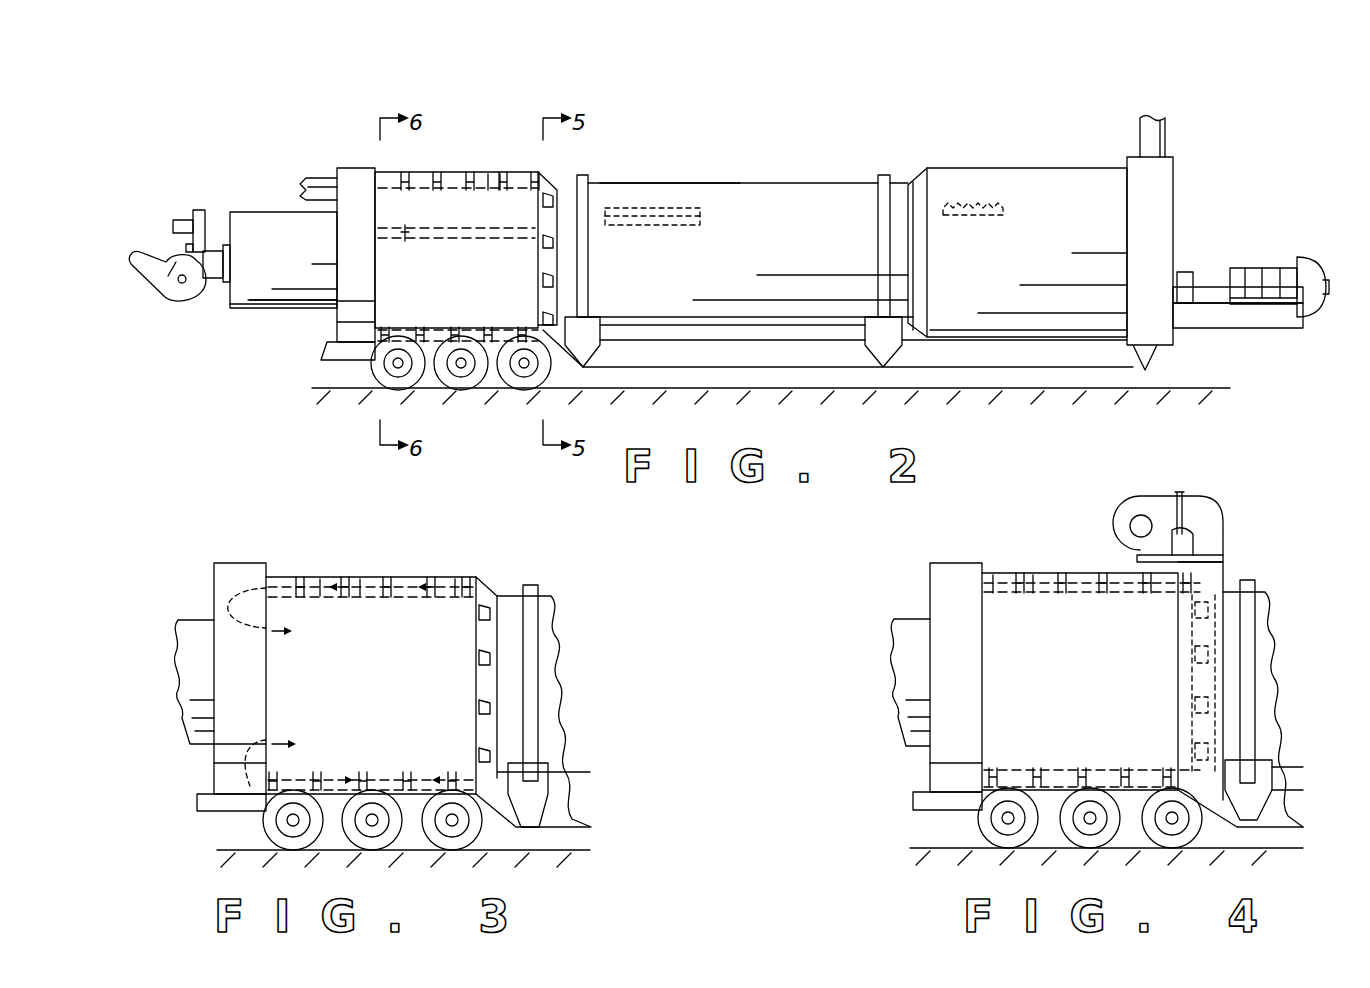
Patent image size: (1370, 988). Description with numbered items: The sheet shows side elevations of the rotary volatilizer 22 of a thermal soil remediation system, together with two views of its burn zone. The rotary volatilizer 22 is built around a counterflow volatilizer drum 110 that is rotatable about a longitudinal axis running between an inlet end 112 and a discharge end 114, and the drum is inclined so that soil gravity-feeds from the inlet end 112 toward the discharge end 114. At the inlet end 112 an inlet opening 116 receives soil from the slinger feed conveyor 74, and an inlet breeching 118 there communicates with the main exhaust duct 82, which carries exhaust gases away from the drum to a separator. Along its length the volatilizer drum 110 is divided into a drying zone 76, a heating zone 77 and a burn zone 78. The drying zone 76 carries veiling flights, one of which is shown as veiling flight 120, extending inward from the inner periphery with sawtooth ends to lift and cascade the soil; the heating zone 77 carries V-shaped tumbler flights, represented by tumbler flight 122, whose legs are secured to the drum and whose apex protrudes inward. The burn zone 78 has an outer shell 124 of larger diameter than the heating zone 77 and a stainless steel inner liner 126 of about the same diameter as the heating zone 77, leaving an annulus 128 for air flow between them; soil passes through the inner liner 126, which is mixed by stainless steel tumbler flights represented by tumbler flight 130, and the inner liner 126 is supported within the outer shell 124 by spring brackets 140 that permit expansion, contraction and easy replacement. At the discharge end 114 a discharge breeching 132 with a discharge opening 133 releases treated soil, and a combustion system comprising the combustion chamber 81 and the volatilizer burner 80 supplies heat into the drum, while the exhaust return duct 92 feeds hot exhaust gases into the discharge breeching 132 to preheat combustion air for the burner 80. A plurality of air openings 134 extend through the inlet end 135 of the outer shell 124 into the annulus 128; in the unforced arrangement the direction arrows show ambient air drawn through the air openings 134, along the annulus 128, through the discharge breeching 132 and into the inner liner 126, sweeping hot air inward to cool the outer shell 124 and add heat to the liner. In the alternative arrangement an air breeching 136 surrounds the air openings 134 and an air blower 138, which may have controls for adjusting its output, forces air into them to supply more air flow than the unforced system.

In FIG. 2, the rotary volatilizer 22 is at (866, 137).
In FIG. 2, the slinger feed conveyor 74 is at (1270, 280).
In FIG. 2, the drying zone 76 is at (1036, 157).
In FIG. 2, the heating zone 77 is at (771, 173).
In FIG. 2, the burn zone 78 is at (436, 160).
In FIG. 3, the burn zone 78 is at (371, 685).
In FIG. 4, the burn zone 78 is at (1091, 681).
In FIG. 2, the volatilizer burner 80 is at (195, 256).
In FIG. 2, the combustion chamber 81 is at (252, 250).
In FIG. 3, the combustion chamber 81 is at (180, 632).
In FIG. 4, the combustion chamber 81 is at (905, 632).
In FIG. 2, the main exhaust duct 82 is at (1158, 128).
In FIG. 2, the exhaust return duct 92 is at (322, 185).
In FIG. 2, the volatilizer drum 110 is at (737, 167).
In FIG. 3, the volatilizer drum 110 is at (544, 706).
In FIG. 2, the inlet end 112 is at (1175, 208).
In FIG. 2, the discharge end 114 is at (337, 248).
In FIG. 2, the inlet opening 116 is at (1176, 280).
In FIG. 2, the inlet breeching 118 is at (1163, 195).
In FIG. 2, the veiling flight 120 is at (960, 200).
In FIG. 2, the tumbler flight 122 is at (657, 206).
In FIG. 2, the outer shell 124 is at (458, 172).
In FIG. 3, the outer shell 124 is at (420, 578).
In FIG. 4, the outer shell 124 is at (1102, 572).
In FIG. 2, the inner liner 126 is at (493, 178).
In FIG. 3, the inner liner 126 is at (360, 580).
In FIG. 4, the inner liner 126 is at (1033, 572).
In FIG. 2, the annulus 128 is at (502, 178).
In FIG. 3, the annulus 128 is at (320, 578).
In FIG. 4, the annulus 128 is at (993, 582).
In FIG. 2, the tumbler flight 130 is at (405, 242).
In FIG. 2, the discharge breeching 132 is at (358, 180).
In FIG. 3, the discharge breeching 132 is at (232, 570).
In FIG. 4, the discharge breeching 132 is at (947, 580).
In FIG. 2, the discharge opening 133 is at (350, 347).
In FIG. 3, the discharge opening 133 is at (205, 795).
In FIG. 4, the discharge opening 133 is at (947, 778).
In FIG. 2, the air openings 134 is at (548, 240).
In FIG. 3, the air openings 134 is at (489, 662).
In FIG. 4, the air openings 134 is at (1203, 655).
In FIG. 2, the inlet end of the outer shell 135 is at (548, 180).
In FIG. 3, the inlet end of the outer shell 135 is at (488, 688).
In FIG. 4, the inlet end of the outer shell 135 is at (1208, 688).
In FIG. 4, the air breeching 136 is at (1212, 572).
In FIG. 4, the air blower 138 is at (1158, 513).
In FIG. 2, the spring bracket 140 is at (488, 328).
In FIG. 3, the spring bracket 140 is at (455, 580).
In FIG. 4, the spring bracket 140 is at (1163, 567).